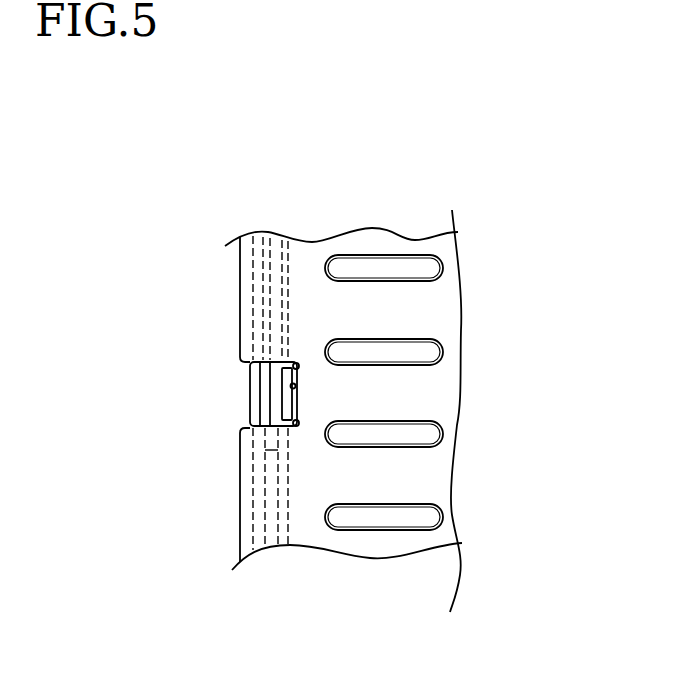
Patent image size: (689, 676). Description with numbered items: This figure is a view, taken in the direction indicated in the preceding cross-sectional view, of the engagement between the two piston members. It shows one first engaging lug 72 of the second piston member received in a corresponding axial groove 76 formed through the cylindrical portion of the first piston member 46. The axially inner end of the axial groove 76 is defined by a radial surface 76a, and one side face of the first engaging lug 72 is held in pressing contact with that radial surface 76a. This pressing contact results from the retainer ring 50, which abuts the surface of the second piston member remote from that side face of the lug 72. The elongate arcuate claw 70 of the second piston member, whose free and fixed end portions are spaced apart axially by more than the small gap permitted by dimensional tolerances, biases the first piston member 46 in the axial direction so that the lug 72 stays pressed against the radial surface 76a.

The first piston member 46 is at (441, 150).
The elongate arcuate claw 70 is at (293, 270).
The retainer ring 50 is at (254, 417).
The axial groove 76 is at (252, 364).
The radial surface 76a is at (295, 385).
The first engaging lug 72 is at (263, 400).